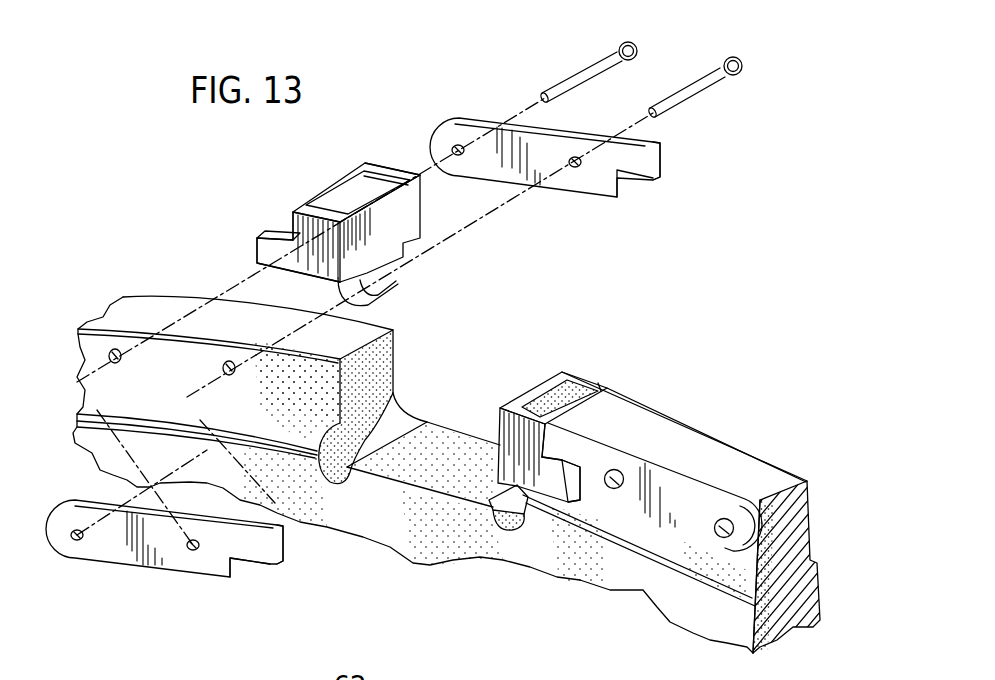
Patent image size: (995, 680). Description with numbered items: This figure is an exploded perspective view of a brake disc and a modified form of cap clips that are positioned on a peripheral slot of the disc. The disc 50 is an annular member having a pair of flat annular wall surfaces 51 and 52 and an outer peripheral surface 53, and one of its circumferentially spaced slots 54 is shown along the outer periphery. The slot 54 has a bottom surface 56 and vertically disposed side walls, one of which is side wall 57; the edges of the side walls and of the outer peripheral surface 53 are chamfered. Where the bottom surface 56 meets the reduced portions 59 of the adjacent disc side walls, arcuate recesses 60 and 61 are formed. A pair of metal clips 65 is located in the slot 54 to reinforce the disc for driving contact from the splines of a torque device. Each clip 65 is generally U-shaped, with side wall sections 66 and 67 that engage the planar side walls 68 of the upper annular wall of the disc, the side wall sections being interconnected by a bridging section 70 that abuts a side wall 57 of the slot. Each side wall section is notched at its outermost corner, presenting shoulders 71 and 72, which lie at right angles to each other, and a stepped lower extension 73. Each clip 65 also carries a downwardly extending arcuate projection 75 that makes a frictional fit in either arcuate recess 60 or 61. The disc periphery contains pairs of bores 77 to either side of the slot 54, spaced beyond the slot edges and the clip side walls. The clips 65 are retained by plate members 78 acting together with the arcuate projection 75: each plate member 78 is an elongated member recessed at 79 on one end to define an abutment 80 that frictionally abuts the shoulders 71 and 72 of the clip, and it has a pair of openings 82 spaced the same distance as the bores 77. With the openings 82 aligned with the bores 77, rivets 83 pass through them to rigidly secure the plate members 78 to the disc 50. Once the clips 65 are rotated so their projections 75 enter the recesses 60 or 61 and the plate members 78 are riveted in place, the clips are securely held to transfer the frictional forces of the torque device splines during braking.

The disc 50 is at (678, 624).
The flat annular wall surface 51 is at (570, 574).
The flat annular wall surface 52 is at (820, 618).
The outer peripheral surface 53 is at (745, 463).
The slot 54 is at (503, 350).
The bottom surface 56 is at (457, 443).
The side wall 57 is at (383, 360).
The reduced portion 59 is at (143, 352).
The arcuate recess 60 is at (333, 484).
The arcuate recess 61 is at (511, 530).
The clip 65 is at (386, 158).
The side wall section 66 is at (320, 265).
The side wall section 67 is at (398, 166).
The planar side wall 68 is at (277, 373).
The bridging section 70 is at (405, 217).
The shoulder 71 is at (291, 228).
The shoulder 72 is at (273, 235).
The stepped lower extension 73 is at (265, 252).
The downwardly extending projection 75 is at (380, 293).
The bore 77 is at (117, 364).
The plate member 78 is at (486, 117).
The recess 79 is at (633, 178).
The abutment 80 is at (647, 163).
The opening 82 is at (462, 155).
The rivet 83 is at (584, 76).